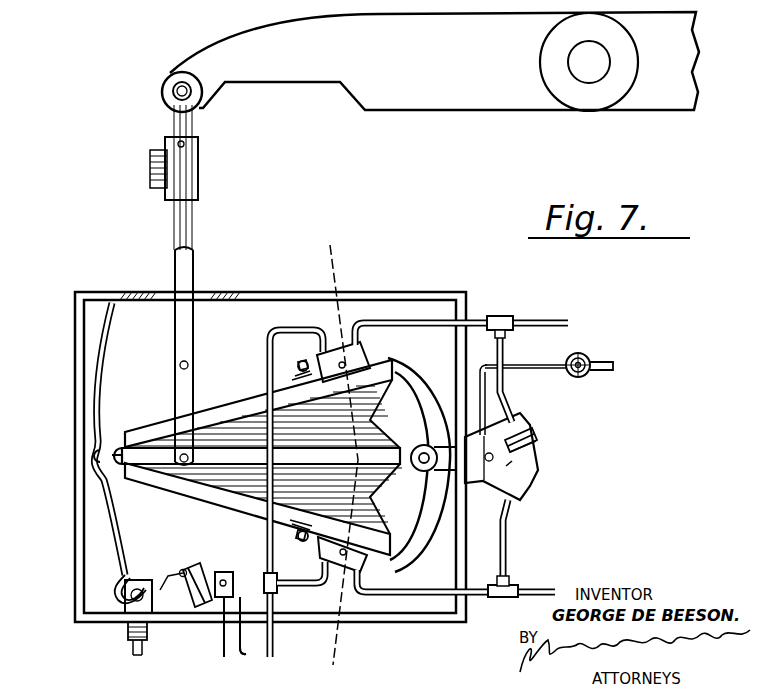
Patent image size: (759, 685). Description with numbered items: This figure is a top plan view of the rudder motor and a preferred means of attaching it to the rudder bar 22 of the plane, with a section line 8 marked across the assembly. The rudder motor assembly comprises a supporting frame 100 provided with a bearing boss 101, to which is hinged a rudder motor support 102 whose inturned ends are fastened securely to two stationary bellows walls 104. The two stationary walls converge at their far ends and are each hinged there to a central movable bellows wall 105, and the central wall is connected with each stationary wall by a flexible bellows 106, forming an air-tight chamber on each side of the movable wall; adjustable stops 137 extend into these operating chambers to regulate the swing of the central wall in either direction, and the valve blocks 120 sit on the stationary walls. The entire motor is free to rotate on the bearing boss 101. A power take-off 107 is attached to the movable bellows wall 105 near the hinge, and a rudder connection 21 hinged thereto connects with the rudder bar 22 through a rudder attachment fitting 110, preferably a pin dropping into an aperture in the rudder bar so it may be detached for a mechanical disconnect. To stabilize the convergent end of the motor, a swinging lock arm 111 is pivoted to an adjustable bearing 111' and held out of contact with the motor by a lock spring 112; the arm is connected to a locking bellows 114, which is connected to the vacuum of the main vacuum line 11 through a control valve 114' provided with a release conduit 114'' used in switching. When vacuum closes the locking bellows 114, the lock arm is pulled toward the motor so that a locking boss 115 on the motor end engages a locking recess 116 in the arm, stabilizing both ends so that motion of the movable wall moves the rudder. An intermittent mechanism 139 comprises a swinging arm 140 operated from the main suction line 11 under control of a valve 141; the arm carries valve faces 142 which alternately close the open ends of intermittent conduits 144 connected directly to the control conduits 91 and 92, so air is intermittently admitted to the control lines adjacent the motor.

The section line 8- 8 is at (344, 252).
The main vacuum line 11 is at (600, 367).
The rudder connection 21 is at (180, 272).
The rudder bar 22 is at (444, 58).
The control conduit 91 is at (552, 319).
The control conduit 92 is at (542, 590).
The supporting frame 100 is at (431, 299).
The bearing boss 101 is at (447, 463).
The rudder motor support 102 is at (412, 365).
The stationary bellows wall 104 is at (213, 412).
The central movable bellows wall 105 is at (203, 455).
The flexible bellows 106 is at (330, 445).
The power take-off 107 is at (178, 392).
The rudder attachment fitting 110 is at (176, 84).
The swinging lock arm 111 is at (73, 439).
The adjustable bearing 111' is at (80, 617).
The lock spring 112 is at (116, 584).
The locking bellows 114 is at (182, 570).
The control valve 114' is at (235, 565).
The release conduit 114'' is at (236, 665).
The locking boss 115 is at (113, 450).
The locking recess 116 is at (97, 455).
The valve block 120 is at (350, 342).
The stop 137 is at (300, 368).
The intermittent mechanism 139 is at (508, 468).
The swinging arm 140 is at (533, 438).
The valve 141 is at (583, 356).
The valve face 142 is at (530, 452).
The intermittent conduit 144 is at (505, 345).